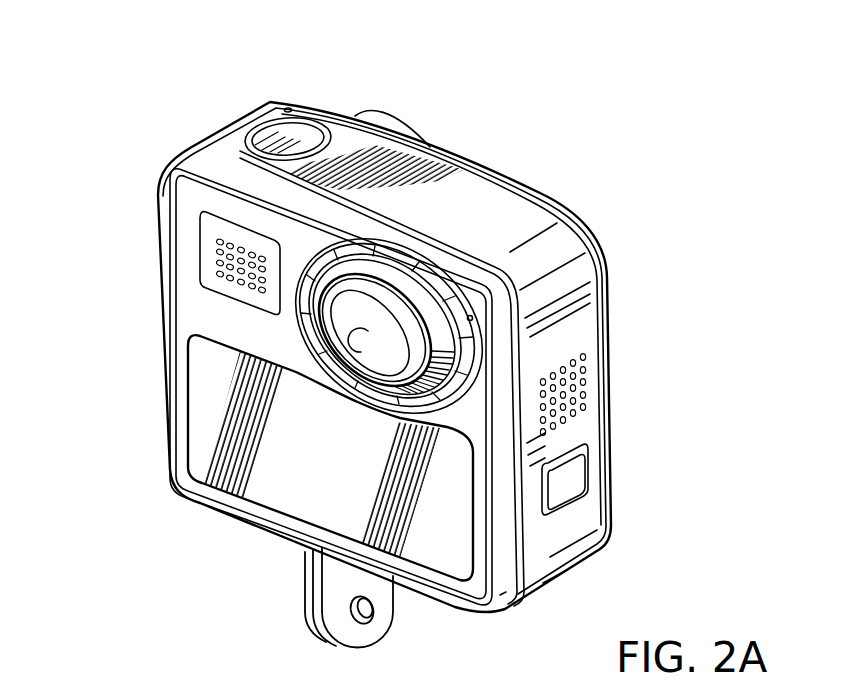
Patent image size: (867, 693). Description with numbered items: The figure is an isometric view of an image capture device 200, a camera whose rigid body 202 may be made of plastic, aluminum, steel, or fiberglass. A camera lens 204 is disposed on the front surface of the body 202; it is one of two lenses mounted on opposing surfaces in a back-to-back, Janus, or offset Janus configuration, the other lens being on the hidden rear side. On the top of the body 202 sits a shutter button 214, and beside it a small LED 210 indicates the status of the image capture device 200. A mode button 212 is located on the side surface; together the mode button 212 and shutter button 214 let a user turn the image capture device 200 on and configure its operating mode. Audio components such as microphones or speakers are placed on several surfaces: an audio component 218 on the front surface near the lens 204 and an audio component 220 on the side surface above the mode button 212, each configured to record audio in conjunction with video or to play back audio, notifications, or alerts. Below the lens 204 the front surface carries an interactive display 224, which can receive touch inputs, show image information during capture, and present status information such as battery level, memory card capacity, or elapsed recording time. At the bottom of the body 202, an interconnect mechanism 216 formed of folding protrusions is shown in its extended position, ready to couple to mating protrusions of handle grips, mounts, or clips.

The image capture device 200 is at (660, 165).
The body 202 is at (162, 329).
The camera lens 204 is at (352, 361).
The LED 210 is at (289, 107).
The mode button 212 is at (576, 470).
The shutter button 214 is at (300, 133).
The interconnect mechanism 216 is at (338, 591).
The audio component 218 is at (220, 266).
The audio component 220 is at (586, 383).
The interactive display 224 is at (455, 560).